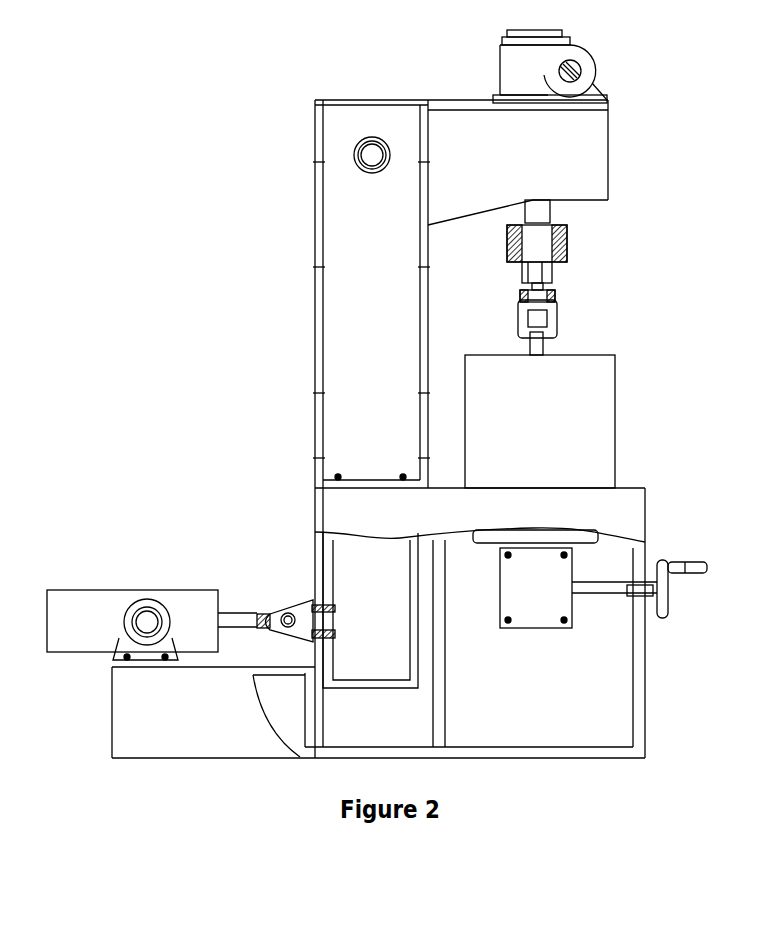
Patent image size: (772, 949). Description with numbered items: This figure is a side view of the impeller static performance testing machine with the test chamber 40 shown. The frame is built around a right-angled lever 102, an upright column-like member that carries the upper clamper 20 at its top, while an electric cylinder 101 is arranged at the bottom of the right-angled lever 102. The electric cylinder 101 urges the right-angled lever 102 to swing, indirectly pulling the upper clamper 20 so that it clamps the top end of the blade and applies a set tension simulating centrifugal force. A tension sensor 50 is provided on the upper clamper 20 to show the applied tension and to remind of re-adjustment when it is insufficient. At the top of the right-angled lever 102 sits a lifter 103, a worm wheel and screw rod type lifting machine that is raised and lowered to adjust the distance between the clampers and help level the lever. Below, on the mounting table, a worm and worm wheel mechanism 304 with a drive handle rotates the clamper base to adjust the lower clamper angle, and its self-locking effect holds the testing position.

The lifter 103 is at (537, 57).
The right-angled lever 102 is at (327, 300).
The tension sensor 50 is at (567, 253).
The upper clamper 20 is at (558, 318).
The test chamber 40 is at (600, 423).
The electric cylinder 101 is at (82, 602).
The worm and worm wheel mechanism 304 is at (535, 607).